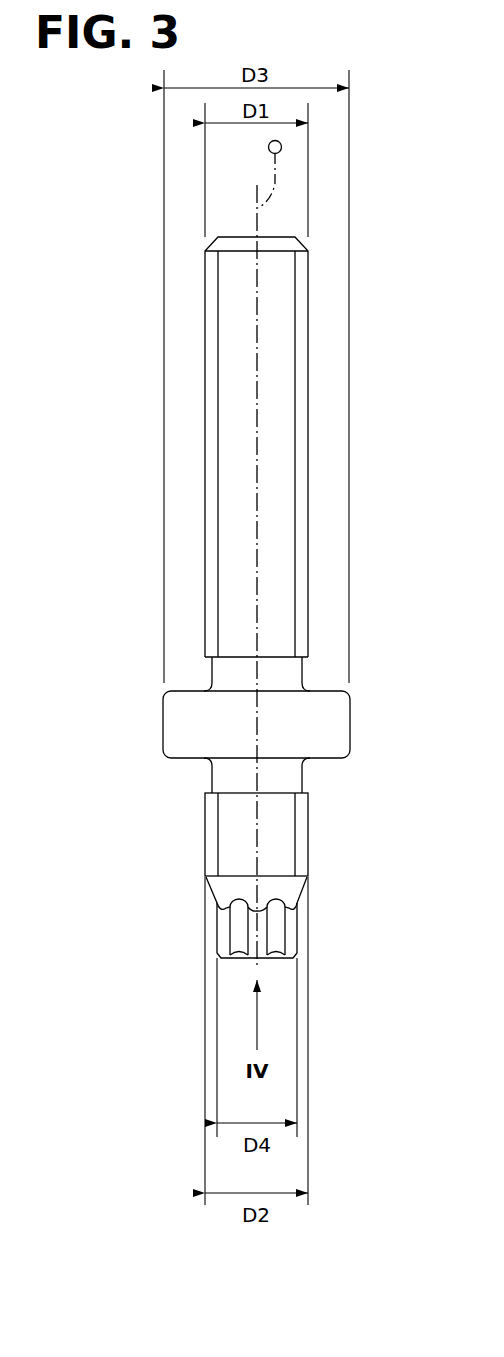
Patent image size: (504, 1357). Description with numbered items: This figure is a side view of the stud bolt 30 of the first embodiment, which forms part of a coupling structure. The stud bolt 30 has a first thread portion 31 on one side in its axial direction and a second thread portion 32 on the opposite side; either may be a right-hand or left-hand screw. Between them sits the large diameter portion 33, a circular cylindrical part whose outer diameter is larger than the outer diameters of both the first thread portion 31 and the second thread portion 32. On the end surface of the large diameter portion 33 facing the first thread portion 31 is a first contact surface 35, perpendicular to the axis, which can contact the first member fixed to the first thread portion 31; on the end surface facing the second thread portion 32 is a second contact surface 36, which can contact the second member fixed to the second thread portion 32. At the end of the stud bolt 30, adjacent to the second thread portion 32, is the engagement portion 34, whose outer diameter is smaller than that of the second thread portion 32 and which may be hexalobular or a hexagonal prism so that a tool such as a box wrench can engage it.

The stud bolt 30 is at (373, 260).
The first thread portion 31 is at (218, 366).
The second thread portion 32 is at (218, 824).
The large diameter portion 33 is at (163, 705).
The engagement portion 34 is at (238, 958).
The first contact surface 35 is at (327, 682).
The second contact surface 36 is at (332, 760).